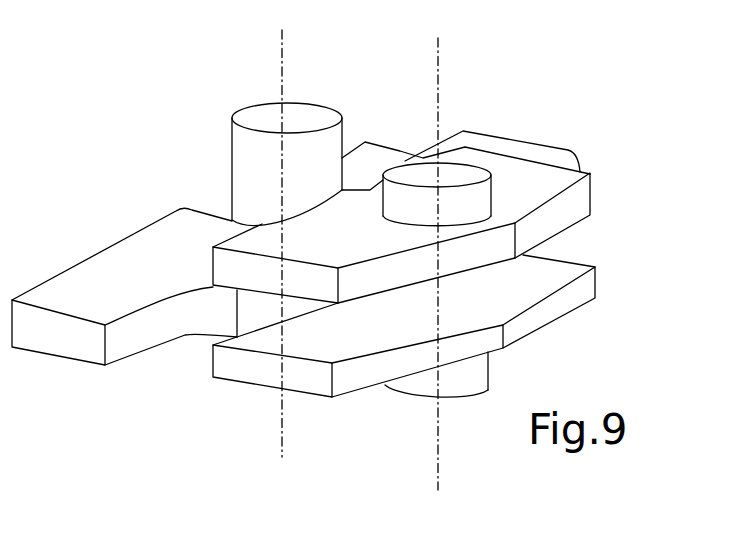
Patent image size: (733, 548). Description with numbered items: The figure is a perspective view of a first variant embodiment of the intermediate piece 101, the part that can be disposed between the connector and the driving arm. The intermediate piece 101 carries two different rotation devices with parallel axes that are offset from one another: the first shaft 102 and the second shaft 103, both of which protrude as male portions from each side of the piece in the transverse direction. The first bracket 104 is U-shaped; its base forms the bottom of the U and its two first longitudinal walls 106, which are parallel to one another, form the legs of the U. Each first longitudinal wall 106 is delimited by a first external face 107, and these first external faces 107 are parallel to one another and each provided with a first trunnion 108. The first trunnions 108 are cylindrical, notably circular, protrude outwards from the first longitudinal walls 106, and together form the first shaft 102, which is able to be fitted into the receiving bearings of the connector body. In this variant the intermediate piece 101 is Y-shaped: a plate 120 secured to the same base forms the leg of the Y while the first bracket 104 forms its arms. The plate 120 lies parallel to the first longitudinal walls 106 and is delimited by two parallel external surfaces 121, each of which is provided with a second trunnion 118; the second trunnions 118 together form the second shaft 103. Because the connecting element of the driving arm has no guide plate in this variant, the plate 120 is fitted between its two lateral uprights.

The intermediate piece 101 is at (537, 74).
The first shaft 102 is at (459, 265).
The second shaft 103 is at (263, 243).
The first bracket 104 is at (300, 426).
The first longitudinal walls 106 is at (593, 200).
The first external faces 107 is at (470, 150).
The first trunnion 108 is at (440, 152).
The second trunnion 118 is at (232, 158).
The plate 120 is at (76, 268).
The external surfaces 121 is at (127, 280).